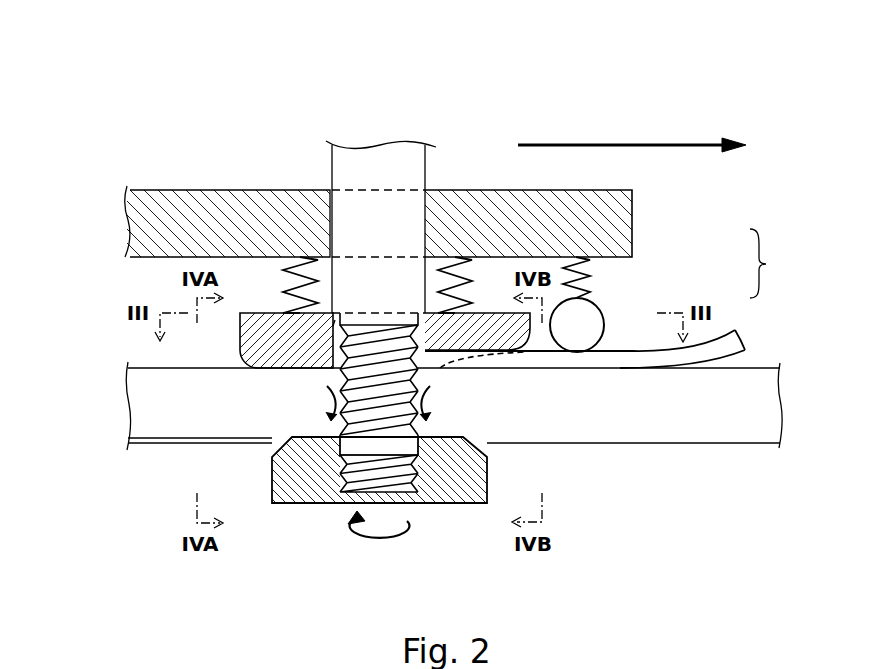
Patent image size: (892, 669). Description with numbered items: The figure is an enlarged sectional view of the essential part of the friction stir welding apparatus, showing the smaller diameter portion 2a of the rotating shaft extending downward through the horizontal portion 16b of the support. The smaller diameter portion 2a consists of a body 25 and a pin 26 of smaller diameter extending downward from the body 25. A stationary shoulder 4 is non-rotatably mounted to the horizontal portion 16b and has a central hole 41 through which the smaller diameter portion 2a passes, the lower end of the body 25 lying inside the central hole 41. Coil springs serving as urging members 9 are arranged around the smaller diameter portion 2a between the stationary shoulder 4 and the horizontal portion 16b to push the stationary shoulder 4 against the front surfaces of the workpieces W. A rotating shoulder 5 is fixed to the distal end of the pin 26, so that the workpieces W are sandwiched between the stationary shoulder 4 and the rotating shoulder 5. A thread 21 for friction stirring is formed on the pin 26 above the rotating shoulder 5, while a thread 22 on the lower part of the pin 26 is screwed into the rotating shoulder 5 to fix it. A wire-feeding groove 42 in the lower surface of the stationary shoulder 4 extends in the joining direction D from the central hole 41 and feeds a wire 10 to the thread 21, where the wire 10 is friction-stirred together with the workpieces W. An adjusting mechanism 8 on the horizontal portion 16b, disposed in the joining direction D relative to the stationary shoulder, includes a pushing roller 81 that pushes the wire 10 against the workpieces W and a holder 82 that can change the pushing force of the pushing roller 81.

The horizontal portion 16b is at (216, 232).
The urging member 9 is at (291, 266).
The central hole 41 is at (333, 327).
The body 25 is at (361, 147).
The smaller diameter portion 2a is at (396, 136).
The stationary shoulder 4 is at (240, 357).
The wire-feeding groove 42 is at (445, 345).
The wire 10 is at (600, 362).
The workpiece W is at (752, 407).
The thread 21 is at (340, 376).
The thread 22 is at (318, 486).
The pin 26 is at (340, 446).
The rotating shoulder 5 is at (445, 480).
The holder 82 is at (583, 283).
The pushing roller 81 is at (589, 325).
The adjusting mechanism 8 is at (765, 263).
The joining direction D is at (613, 138).